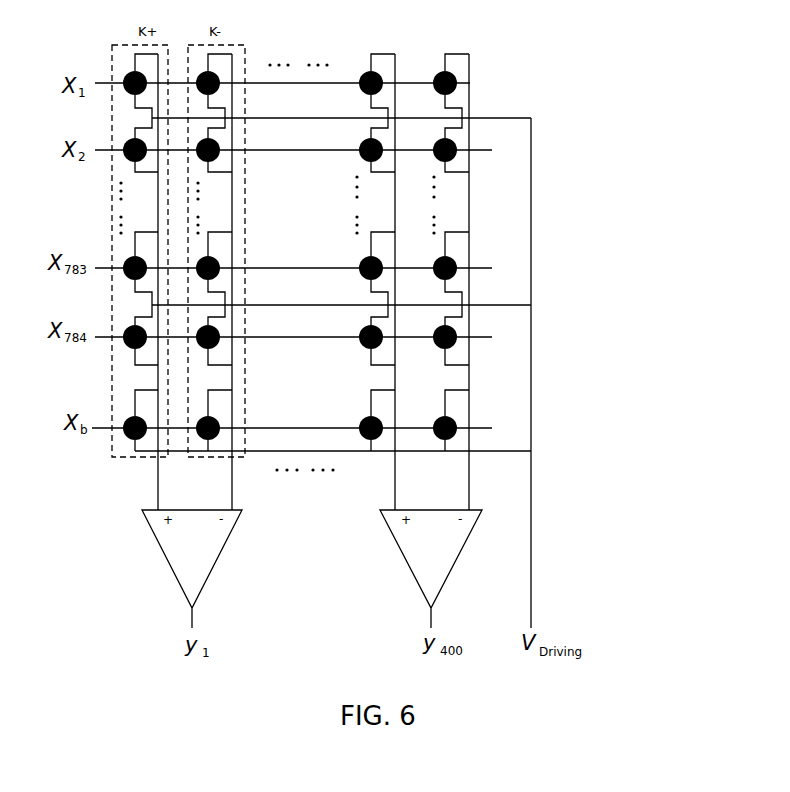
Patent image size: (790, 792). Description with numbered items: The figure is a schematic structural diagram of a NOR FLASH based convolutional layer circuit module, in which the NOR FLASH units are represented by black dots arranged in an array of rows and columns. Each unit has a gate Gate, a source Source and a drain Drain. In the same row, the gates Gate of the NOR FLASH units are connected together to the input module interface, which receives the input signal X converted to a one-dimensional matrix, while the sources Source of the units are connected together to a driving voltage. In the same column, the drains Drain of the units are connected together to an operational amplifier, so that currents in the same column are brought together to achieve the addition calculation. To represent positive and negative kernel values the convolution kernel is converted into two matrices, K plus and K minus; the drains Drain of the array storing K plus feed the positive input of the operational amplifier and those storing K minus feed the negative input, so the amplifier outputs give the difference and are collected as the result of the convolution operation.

The gate Gate is at (450, 83).
The source Source is at (531, 140).
The drain Drain is at (469, 188).